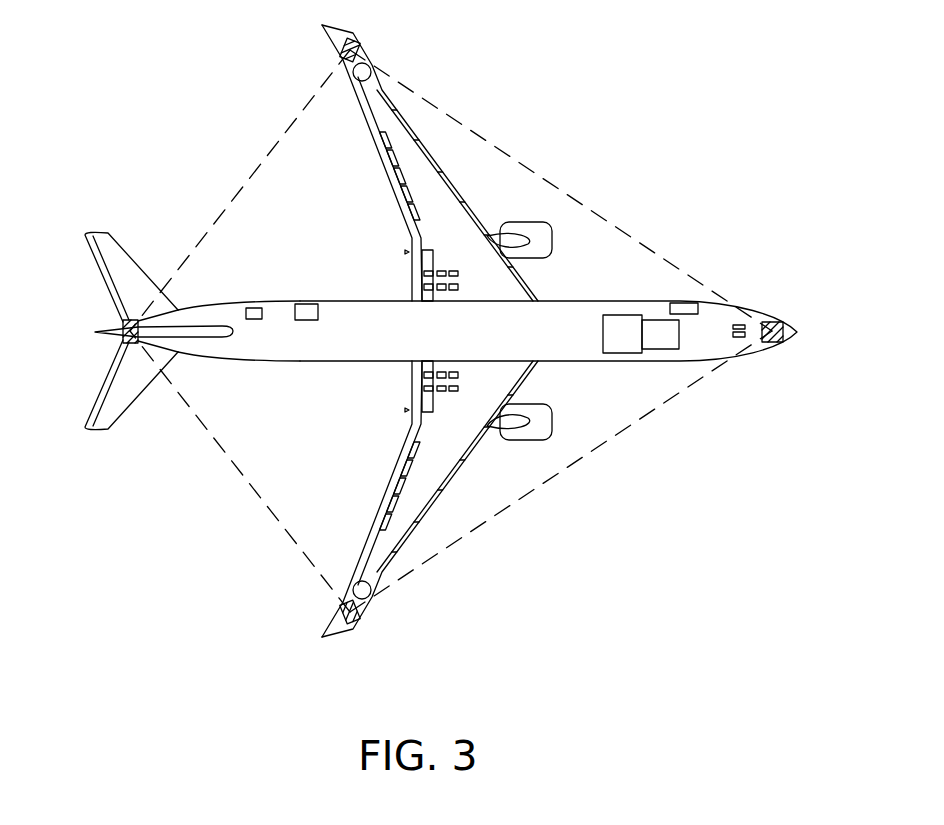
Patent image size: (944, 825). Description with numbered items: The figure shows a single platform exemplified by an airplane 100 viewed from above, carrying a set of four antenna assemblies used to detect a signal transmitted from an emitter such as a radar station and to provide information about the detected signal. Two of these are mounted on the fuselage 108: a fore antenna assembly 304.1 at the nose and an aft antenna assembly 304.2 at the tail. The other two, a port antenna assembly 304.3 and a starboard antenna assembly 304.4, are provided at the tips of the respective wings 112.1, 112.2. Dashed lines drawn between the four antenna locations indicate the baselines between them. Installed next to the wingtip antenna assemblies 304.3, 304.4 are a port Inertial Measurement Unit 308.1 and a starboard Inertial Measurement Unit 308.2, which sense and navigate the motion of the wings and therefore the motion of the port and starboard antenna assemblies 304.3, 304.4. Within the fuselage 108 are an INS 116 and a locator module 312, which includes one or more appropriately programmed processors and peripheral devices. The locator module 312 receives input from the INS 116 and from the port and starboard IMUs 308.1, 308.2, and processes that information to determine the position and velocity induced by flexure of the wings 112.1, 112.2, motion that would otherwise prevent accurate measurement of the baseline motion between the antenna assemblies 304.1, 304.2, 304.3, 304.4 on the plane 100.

The airplane 100 is at (748, 303).
The fuselage 108 is at (400, 344).
The wing 112.1 is at (445, 202).
The wing 112.2 is at (433, 463).
The INS 116 is at (657, 327).
The fore antenna assembly 304.1 is at (784, 331).
The aft antenna assembly 304.2 is at (122, 325).
The port antenna assembly 304.3 is at (358, 47).
The starboard antenna assembly 304.4 is at (355, 624).
The port Inertial Measurement Unit 308.1 is at (371, 69).
The starboard Inertial Measurement Unit 308.2 is at (372, 598).
The locator module 312 is at (620, 348).